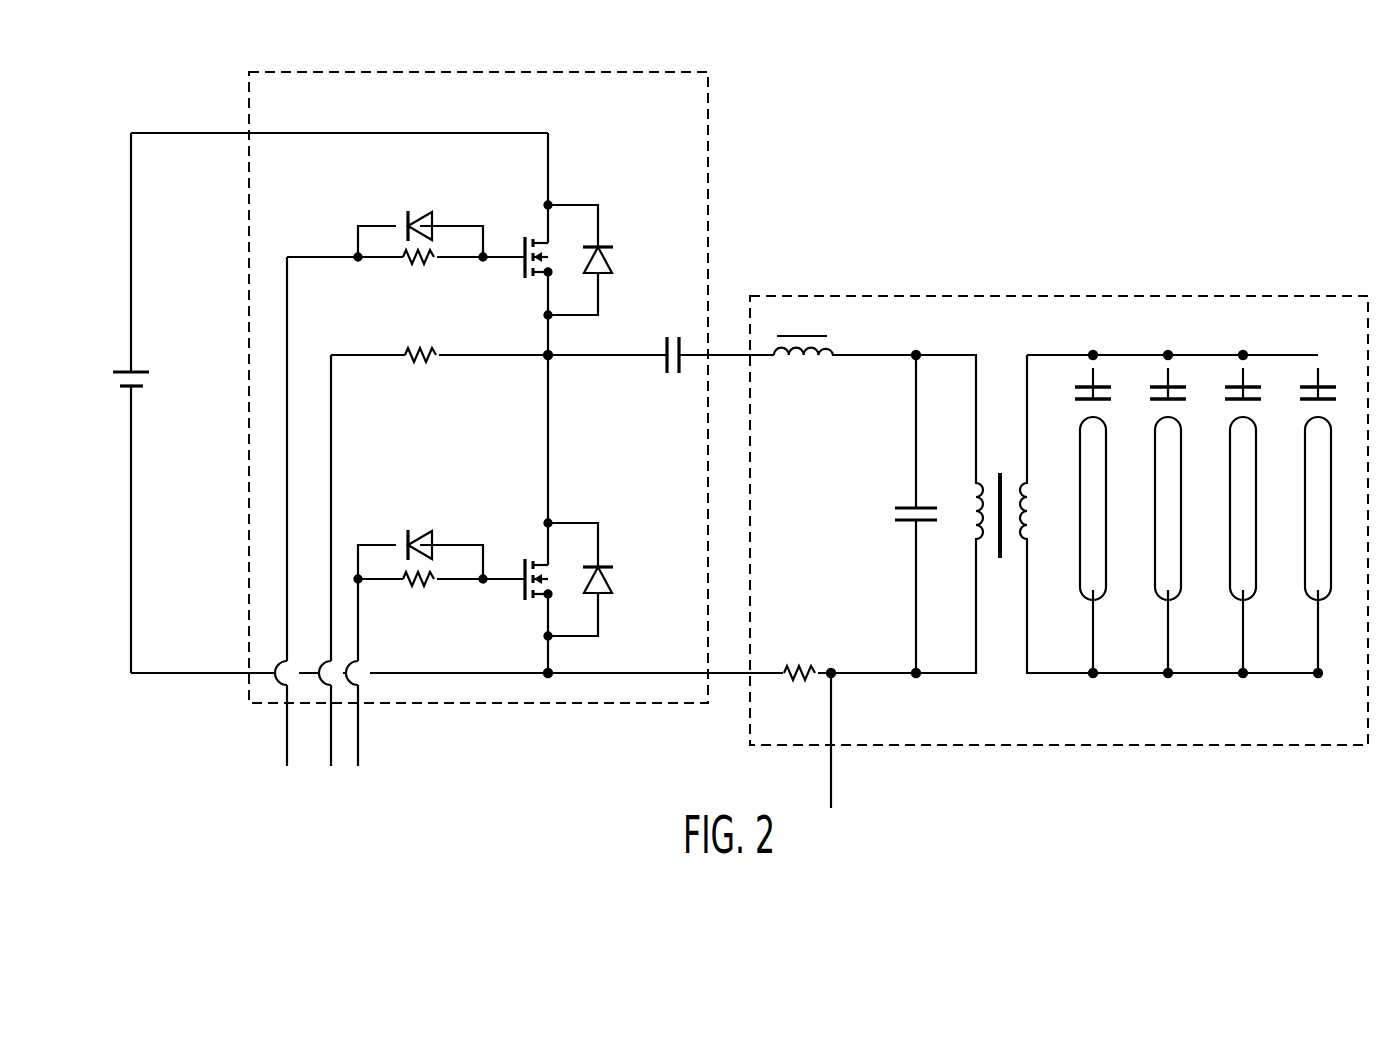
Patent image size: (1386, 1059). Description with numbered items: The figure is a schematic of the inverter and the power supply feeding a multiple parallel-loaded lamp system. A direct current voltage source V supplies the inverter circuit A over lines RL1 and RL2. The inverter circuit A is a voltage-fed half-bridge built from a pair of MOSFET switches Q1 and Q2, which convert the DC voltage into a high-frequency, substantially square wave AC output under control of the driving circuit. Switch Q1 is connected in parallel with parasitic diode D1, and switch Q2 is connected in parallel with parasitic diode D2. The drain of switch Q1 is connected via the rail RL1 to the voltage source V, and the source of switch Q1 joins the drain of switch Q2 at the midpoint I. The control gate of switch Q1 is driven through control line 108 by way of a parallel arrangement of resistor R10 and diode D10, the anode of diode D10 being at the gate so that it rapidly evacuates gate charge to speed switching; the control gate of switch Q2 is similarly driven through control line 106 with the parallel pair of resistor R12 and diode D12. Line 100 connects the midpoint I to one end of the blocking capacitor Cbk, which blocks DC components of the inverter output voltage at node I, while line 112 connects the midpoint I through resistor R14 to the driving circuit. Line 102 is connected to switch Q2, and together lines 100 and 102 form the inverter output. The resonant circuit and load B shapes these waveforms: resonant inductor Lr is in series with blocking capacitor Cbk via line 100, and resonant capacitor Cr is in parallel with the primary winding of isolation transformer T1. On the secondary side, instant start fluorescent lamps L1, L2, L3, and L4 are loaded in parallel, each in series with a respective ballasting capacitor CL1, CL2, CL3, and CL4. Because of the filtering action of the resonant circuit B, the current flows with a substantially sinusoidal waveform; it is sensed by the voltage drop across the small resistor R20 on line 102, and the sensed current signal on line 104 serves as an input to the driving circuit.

The inverter circuit A is at (708, 147).
The resonant circuit and load B is at (998, 296).
The rail RL1 is at (288, 133).
The line RL2 is at (201, 674).
The voltage source V is at (141, 403).
The control line 108 is at (287, 489).
The line 112 is at (332, 441).
The control line 106 is at (359, 750).
The diode D10 is at (416, 215).
The resistor R10 is at (419, 268).
The switch Q1 is at (552, 250).
The parasitic diode D1 is at (622, 258).
The midpoint I is at (545, 354).
The resistor R14 is at (425, 363).
The line 100 is at (604, 355).
The blocking capacitor Cbk is at (714, 371).
The diode D12 is at (416, 533).
The resistor R12 is at (414, 596).
The switch Q2 is at (552, 570).
The parasitic diode D2 is at (615, 580).
The line 102 is at (580, 675).
The resistor R20 is at (797, 665).
The line 104 is at (833, 778).
The resonant inductor Lr is at (845, 363).
The resonant capacitor Cr is at (901, 514).
The isolation transformer T1 is at (1117, 514).
The ballasting capacitor CL1 is at (1072, 387).
The ballasting capacitor CL2 is at (1148, 387).
The ballasting capacitor CL3 is at (1223, 387).
The ballasting capacitor CL4 is at (1298, 387).
The fluorescent lamp L1 is at (1080, 582).
The fluorescent lamp L2 is at (1155, 582).
The fluorescent lamp L3 is at (1230, 582).
The fluorescent lamp L4 is at (1305, 582).